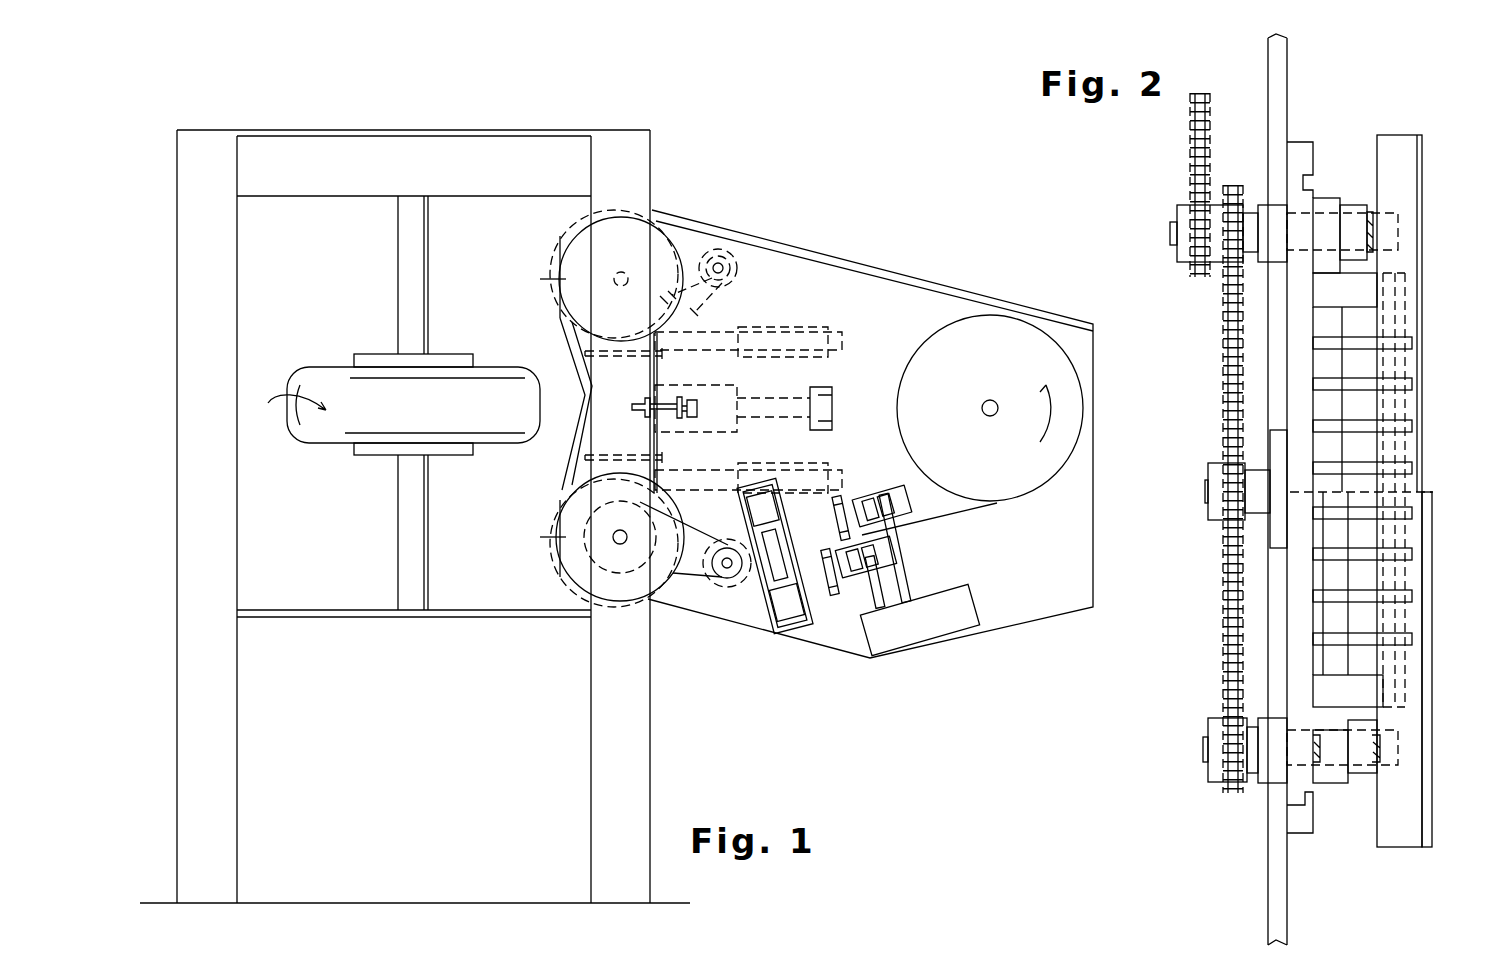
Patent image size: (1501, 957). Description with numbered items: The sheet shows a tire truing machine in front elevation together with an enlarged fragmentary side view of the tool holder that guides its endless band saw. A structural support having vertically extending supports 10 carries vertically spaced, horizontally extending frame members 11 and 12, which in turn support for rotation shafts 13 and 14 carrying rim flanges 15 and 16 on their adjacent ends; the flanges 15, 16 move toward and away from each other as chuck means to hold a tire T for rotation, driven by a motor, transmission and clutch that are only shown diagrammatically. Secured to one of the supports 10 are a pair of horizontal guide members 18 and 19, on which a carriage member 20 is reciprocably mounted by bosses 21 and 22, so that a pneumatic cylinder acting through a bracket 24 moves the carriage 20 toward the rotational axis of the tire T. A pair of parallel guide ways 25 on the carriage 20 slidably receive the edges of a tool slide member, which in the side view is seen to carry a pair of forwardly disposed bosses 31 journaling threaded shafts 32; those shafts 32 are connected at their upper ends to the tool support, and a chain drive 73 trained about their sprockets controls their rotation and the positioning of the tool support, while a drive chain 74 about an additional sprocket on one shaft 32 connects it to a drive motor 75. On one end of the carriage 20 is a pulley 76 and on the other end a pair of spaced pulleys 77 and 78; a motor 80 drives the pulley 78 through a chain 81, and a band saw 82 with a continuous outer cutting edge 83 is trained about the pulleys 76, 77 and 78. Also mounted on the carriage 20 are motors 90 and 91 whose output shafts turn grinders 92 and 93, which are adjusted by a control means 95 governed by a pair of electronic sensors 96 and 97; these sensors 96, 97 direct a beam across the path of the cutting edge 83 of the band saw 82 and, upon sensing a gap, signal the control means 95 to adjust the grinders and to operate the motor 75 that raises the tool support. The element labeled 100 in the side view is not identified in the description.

In FIG. 1, the vertical extending supports 10 is at (188, 746).
In FIG. 1, the frame member 11 is at (538, 136).
In FIG. 1, the frame member 12 is at (260, 613).
In FIG. 1, the shaft 13 is at (398, 278).
In FIG. 1, the shaft 14 is at (398, 528).
In FIG. 1, the rim flange 15 is at (448, 359).
In FIG. 1, the rim flange 16 is at (455, 451).
In FIG. 1, the tire T is at (322, 382).
In FIG. 1, the guide member 18 is at (711, 331).
In FIG. 1, the guide member 19 is at (688, 470).
In FIG. 1, the carriage member 20 is at (845, 655).
In FIG. 1, the boss 21 is at (788, 463).
In FIG. 1, the boss 22 is at (790, 327).
In FIG. 1, the bracket 24 is at (825, 387).
In FIG. 1, the guide ways 25 is at (745, 387).
In FIG. 2, the bosses 31 is at (1262, 257).
In FIG. 2, the threaded shaft 32 is at (1370, 212).
In FIG. 2, the chain drive 73 is at (1222, 567).
In FIG. 1, the drive chain 74 is at (733, 295).
In FIG. 2, the drive chain 74 is at (1190, 153).
In FIG. 1, the drive motor 75 is at (738, 268).
In FIG. 1, the pulley 76 is at (990, 408).
In FIG. 1, the pulley 77 is at (560, 278).
In FIG. 1, the pulley 78 is at (560, 536).
In FIG. 1, the motor 80 is at (741, 587).
In FIG. 1, the chain 81 is at (698, 541).
In FIG. 1, the band saw 82 is at (968, 510).
In FIG. 2, the band saw 82 is at (1410, 269).
In FIG. 2, the cutting edge 83 is at (1432, 549).
In FIG. 1, the motor 90 is at (862, 498).
In FIG. 1, the motor 91 is at (895, 560).
In FIG. 1, the grinder 92 is at (837, 516).
In FIG. 1, the grinder 93 is at (825, 597).
In FIG. 1, the control means 95 is at (919, 619).
In FIG. 1, the electronic sensor 96 is at (740, 511).
In FIG. 1, the electronic sensor 97 is at (775, 631).
In FIG. 2, the cross bar 100 is at (1375, 291).